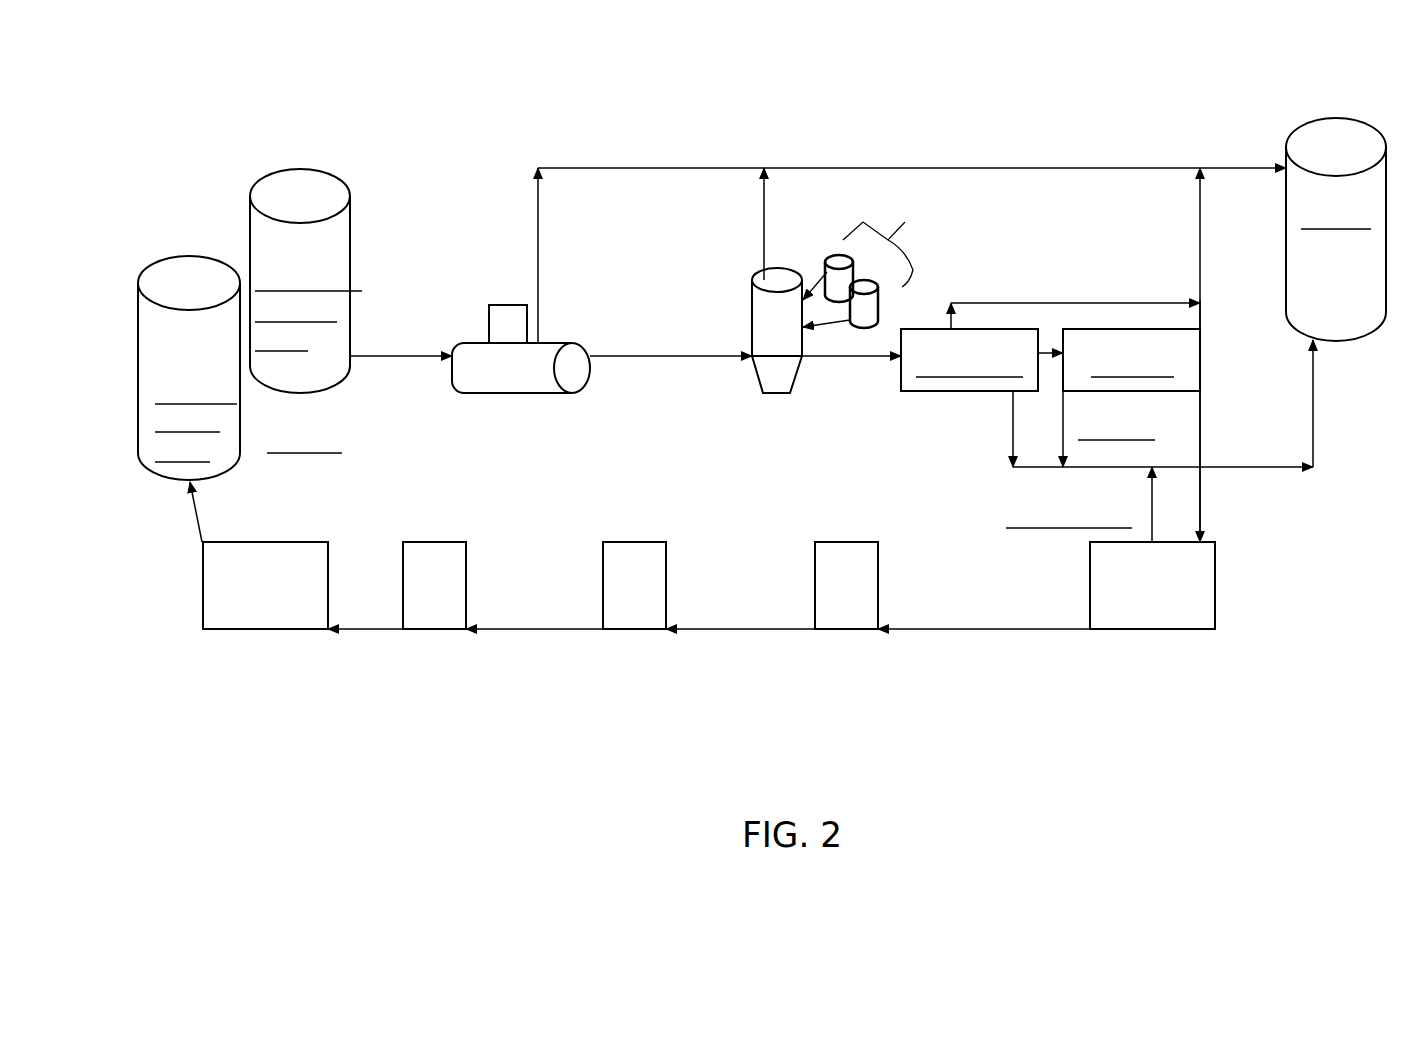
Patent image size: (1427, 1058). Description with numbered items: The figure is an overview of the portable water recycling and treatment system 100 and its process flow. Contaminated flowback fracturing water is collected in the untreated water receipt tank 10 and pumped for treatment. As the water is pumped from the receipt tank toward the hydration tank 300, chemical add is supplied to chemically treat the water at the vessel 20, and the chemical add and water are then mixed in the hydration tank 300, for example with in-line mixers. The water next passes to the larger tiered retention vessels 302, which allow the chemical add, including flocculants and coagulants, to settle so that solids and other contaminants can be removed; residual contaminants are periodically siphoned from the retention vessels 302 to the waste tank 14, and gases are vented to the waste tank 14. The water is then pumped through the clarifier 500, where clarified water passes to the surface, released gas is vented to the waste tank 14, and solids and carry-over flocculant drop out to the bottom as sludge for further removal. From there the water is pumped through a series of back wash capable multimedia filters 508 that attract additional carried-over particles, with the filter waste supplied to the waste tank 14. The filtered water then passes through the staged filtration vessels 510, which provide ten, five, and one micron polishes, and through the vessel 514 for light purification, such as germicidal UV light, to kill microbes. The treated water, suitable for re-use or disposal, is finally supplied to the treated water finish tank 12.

The portable water recycling and treatment system 100 is at (877, 117).
The untreated water receipt tank 10 is at (275, 165).
The treated water finish tank 12 is at (189, 255).
The waste tank 14 is at (1348, 115).
The vessel 20 is at (472, 315).
The hydration tank 300 is at (748, 292).
The retention vessels 302 is at (937, 393).
The clarifier 500 is at (1202, 350).
The back wash capable multimedia filters 508 is at (1232, 580).
The staged filtration vessels 510 is at (853, 542).
The vessel for light purification 514 is at (303, 538).